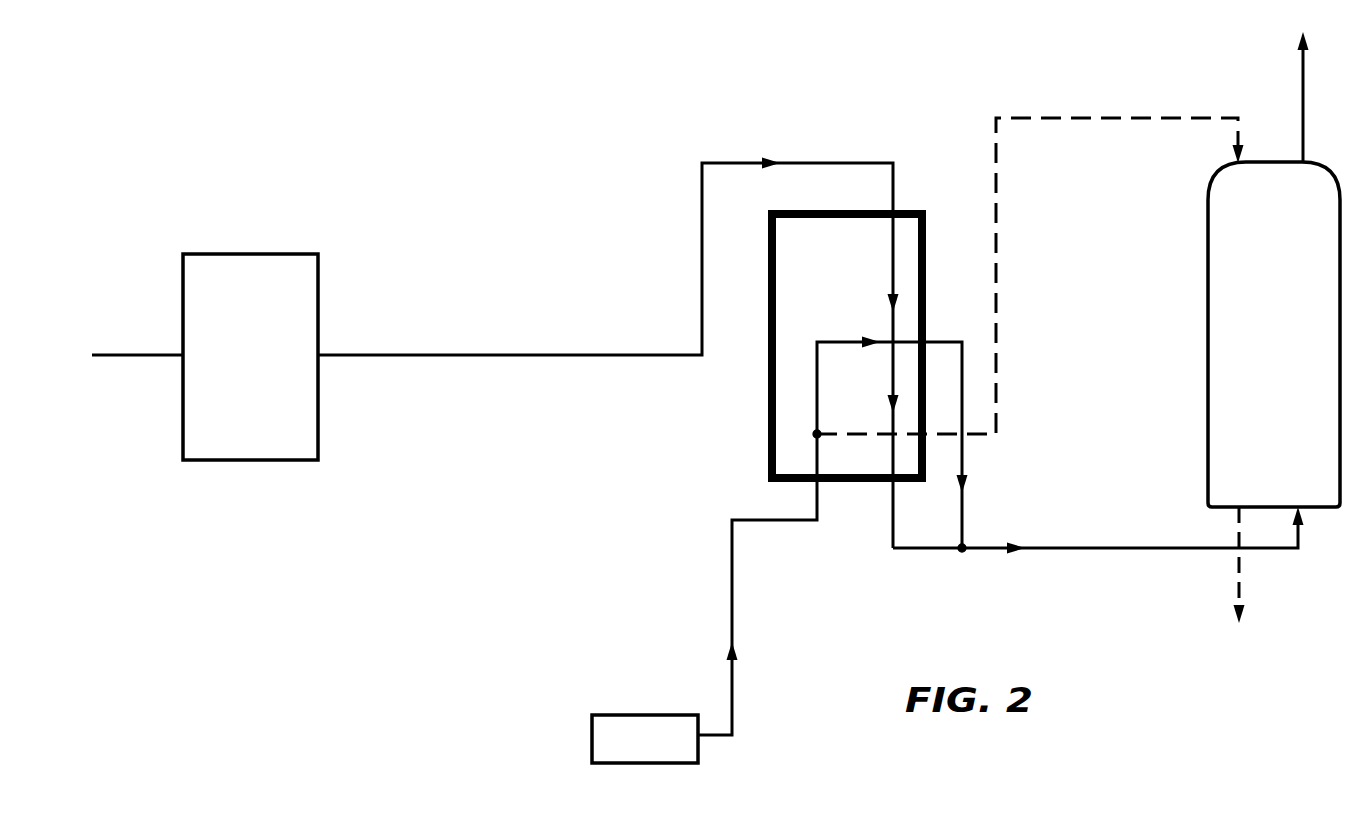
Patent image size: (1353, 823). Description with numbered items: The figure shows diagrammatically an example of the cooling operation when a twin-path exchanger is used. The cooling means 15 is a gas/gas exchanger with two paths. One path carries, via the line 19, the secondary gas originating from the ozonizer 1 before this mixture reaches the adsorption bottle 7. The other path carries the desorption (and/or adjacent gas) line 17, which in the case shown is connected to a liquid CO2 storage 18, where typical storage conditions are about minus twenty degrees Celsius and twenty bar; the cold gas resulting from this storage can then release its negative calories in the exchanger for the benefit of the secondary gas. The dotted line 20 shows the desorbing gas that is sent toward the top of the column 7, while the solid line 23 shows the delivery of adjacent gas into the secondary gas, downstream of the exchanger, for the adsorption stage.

The ozonizer 1 is at (258, 375).
The adsorption bottle 7 is at (1286, 332).
The cooling means 15 is at (864, 270).
The desorption line 17 is at (825, 412).
The liquid CO2 storage 18 is at (586, 728).
The line 19 is at (158, 350).
The dotted line 20 is at (1002, 281).
The solid line 23 is at (982, 498).